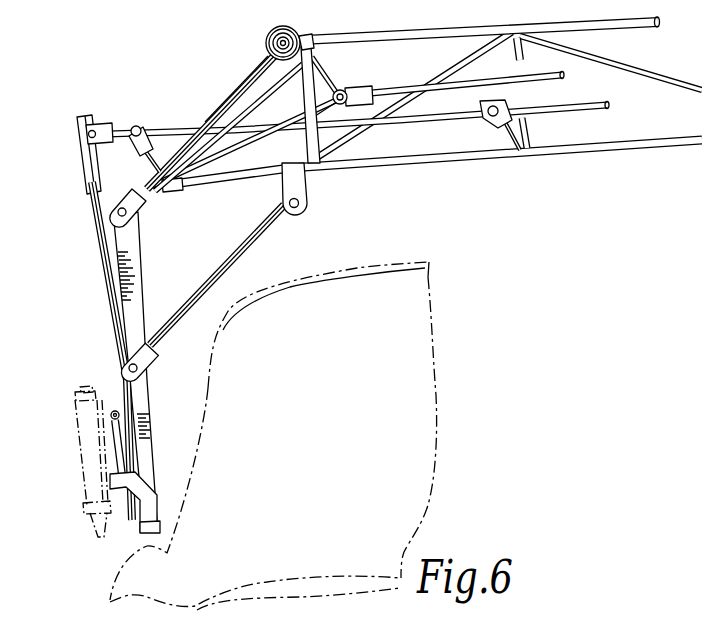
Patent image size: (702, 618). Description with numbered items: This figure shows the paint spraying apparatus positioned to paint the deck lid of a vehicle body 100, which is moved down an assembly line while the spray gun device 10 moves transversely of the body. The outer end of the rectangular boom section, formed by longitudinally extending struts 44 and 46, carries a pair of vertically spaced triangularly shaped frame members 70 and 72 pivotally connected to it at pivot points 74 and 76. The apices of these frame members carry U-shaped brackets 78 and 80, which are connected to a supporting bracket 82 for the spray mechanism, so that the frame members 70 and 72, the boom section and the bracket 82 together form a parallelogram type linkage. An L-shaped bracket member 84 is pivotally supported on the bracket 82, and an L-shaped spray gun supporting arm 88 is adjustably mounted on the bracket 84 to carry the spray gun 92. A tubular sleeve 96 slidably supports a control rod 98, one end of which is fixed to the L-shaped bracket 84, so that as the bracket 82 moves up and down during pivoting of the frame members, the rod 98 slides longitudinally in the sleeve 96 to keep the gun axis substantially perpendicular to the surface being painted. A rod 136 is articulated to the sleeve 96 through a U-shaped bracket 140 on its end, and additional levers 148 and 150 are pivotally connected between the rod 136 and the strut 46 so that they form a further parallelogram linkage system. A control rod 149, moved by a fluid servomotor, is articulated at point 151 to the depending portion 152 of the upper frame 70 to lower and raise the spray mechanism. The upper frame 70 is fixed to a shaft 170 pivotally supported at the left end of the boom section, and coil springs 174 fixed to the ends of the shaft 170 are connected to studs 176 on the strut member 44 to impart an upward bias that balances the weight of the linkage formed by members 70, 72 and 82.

The spray gun device 10 is at (78, 412).
The strut 44 is at (650, 24).
The strut 46 is at (640, 150).
The upper triangular frame member 70 is at (218, 106).
The lower triangular frame member 72 is at (212, 290).
The pivot point 74 is at (282, 36).
The pivot point 76 is at (306, 201).
The U-shaped bracket 78 is at (138, 202).
The U-shaped bracket 80 is at (158, 360).
The supporting bracket 82 is at (132, 325).
The L-shaped bracket member 84 is at (150, 497).
The L-shaped spray gun supporting arm 88 is at (127, 517).
The spray gun 92 is at (83, 457).
The tubular sleeve 96 is at (88, 163).
The control rod 98 is at (100, 248).
The vehicle body 100 is at (415, 301).
The rod 136 is at (596, 108).
The U-shaped bracket 140 is at (100, 125).
The lever 148 is at (490, 123).
The control rod 149 is at (563, 80).
The lever 150 is at (147, 150).
The point 151 is at (352, 92).
The depending portion 152 is at (250, 143).
The shaft 170 is at (268, 47).
The coil spring 174 is at (262, 59).
The stud 176 is at (312, 38).